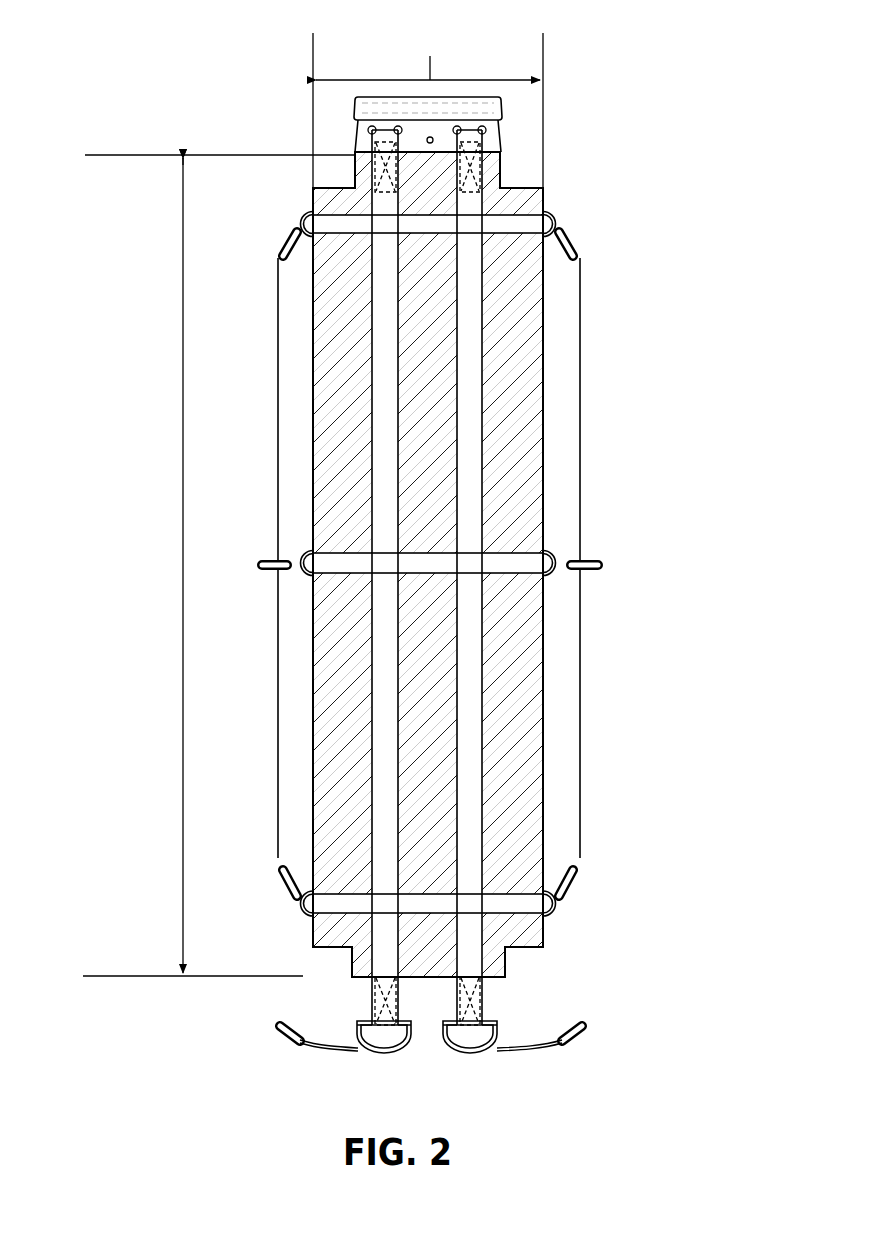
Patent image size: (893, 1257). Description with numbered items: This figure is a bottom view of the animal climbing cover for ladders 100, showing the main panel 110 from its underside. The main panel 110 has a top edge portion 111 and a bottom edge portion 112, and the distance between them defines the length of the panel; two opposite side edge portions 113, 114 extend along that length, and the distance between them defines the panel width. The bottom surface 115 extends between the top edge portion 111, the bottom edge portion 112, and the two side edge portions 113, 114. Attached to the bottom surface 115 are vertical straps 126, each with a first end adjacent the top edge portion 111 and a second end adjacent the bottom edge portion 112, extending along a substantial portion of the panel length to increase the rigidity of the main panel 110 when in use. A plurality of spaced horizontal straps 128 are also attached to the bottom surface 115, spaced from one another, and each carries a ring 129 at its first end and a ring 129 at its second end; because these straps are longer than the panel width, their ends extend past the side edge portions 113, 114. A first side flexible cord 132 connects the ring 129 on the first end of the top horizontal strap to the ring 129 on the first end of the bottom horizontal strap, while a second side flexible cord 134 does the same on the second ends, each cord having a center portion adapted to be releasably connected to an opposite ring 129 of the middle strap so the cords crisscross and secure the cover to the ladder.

The animal climbing cover for ladders 100 is at (684, 146).
The main panel 110 is at (547, 290).
The top edge portion 111 is at (201, 153).
The bottom edge portion 112 is at (175, 975).
The first side edge portion 113 is at (312, 98).
The second side edge portion 114 is at (544, 98).
The bottom surface 115 is at (438, 390).
The vertical strap 126 is at (382, 437).
The horizontal straps 128 is at (518, 213).
The ring 129 is at (297, 212).
The first side flexible cord 132 is at (277, 333).
The second side flexible cord 134 is at (582, 332).